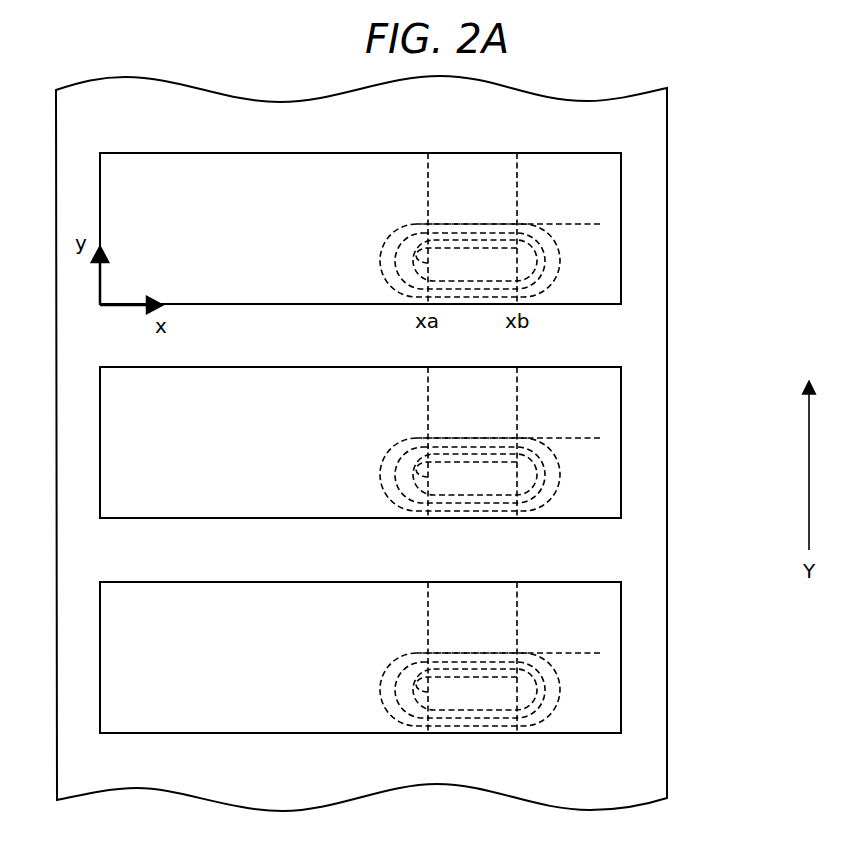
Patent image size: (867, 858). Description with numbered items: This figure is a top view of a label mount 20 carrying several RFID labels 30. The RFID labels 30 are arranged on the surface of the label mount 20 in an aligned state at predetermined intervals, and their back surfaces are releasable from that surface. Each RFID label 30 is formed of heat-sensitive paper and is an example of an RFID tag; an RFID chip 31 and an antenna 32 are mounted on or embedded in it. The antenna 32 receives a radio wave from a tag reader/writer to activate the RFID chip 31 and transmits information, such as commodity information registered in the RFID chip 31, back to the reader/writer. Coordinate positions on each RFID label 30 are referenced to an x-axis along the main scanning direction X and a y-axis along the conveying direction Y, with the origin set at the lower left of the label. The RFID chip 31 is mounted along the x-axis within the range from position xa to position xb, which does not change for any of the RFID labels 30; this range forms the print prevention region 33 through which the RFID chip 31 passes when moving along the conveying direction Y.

The label mount 20 is at (667, 117).
The RFID label 30 is at (621, 248).
The RFID chip 31 is at (517, 263).
The antenna 32 is at (583, 224).
The print prevention region 33 is at (517, 168).